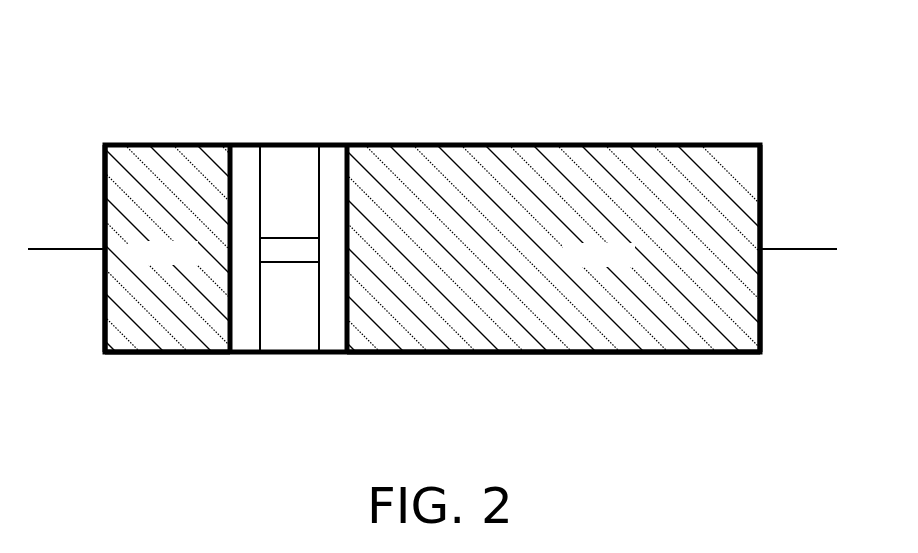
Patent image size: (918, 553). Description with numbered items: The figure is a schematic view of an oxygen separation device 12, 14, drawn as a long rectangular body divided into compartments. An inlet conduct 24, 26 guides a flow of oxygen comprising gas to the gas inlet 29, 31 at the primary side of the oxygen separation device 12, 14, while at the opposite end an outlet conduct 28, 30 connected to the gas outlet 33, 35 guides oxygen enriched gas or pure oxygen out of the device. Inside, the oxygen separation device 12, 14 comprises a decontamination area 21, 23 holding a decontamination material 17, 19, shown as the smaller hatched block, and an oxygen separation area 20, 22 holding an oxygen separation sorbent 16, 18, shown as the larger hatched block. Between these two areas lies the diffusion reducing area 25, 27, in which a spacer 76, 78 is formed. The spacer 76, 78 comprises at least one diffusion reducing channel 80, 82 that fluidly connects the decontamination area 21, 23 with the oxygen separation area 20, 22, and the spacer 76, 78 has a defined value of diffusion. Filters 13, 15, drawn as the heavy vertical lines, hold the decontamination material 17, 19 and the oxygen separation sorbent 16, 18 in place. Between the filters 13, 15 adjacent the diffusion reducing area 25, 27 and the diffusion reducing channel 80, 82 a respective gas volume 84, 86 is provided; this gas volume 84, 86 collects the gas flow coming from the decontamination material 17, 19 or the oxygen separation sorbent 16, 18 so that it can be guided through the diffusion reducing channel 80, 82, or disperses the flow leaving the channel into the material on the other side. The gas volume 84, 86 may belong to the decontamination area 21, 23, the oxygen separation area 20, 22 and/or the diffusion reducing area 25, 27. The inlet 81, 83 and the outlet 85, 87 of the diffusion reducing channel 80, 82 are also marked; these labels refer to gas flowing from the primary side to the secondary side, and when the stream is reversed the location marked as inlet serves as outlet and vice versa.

The oxygen separation device 12 is at (432, 212).
The oxygen separation device 14 is at (553, 145).
The filter 13 is at (434, 217).
The filter 15 is at (105, 145).
The oxygen separation sorbent 16 is at (528, 248).
The oxygen separation sorbent 18 is at (528, 248).
The decontamination material 17 is at (238, 248).
The decontamination material 19 is at (238, 248).
The oxygen separation area 20 is at (553, 402).
The oxygen separation area 22 is at (583, 376).
The decontamination area 21 is at (167, 402).
The decontamination area 23 is at (158, 375).
The inlet conduct 24 is at (66, 247).
The inlet conduct 26 is at (66, 247).
The diffusion reducing area 25 is at (283, 357).
The diffusion reducing area 27 is at (289, 376).
The outlet conduct 28 is at (799, 248).
The outlet conduct 30 is at (799, 248).
The gas inlet 29 is at (66, 247).
The gas inlet 31 is at (85, 249).
The gas outlet 33 is at (799, 248).
The gas outlet 35 is at (778, 248).
The spacer 76 is at (286, 124).
The spacer 78 is at (287, 120).
The diffusion reducing channel 80 is at (316, 332).
The diffusion reducing channel 82 is at (290, 250).
The inlet 81 is at (262, 326).
The inlet 83 is at (258, 248).
The gas volume 84 is at (286, 200).
The gas volume 86 is at (245, 157).
The outlet 85 is at (392, 326).
The outlet 87 is at (320, 248).